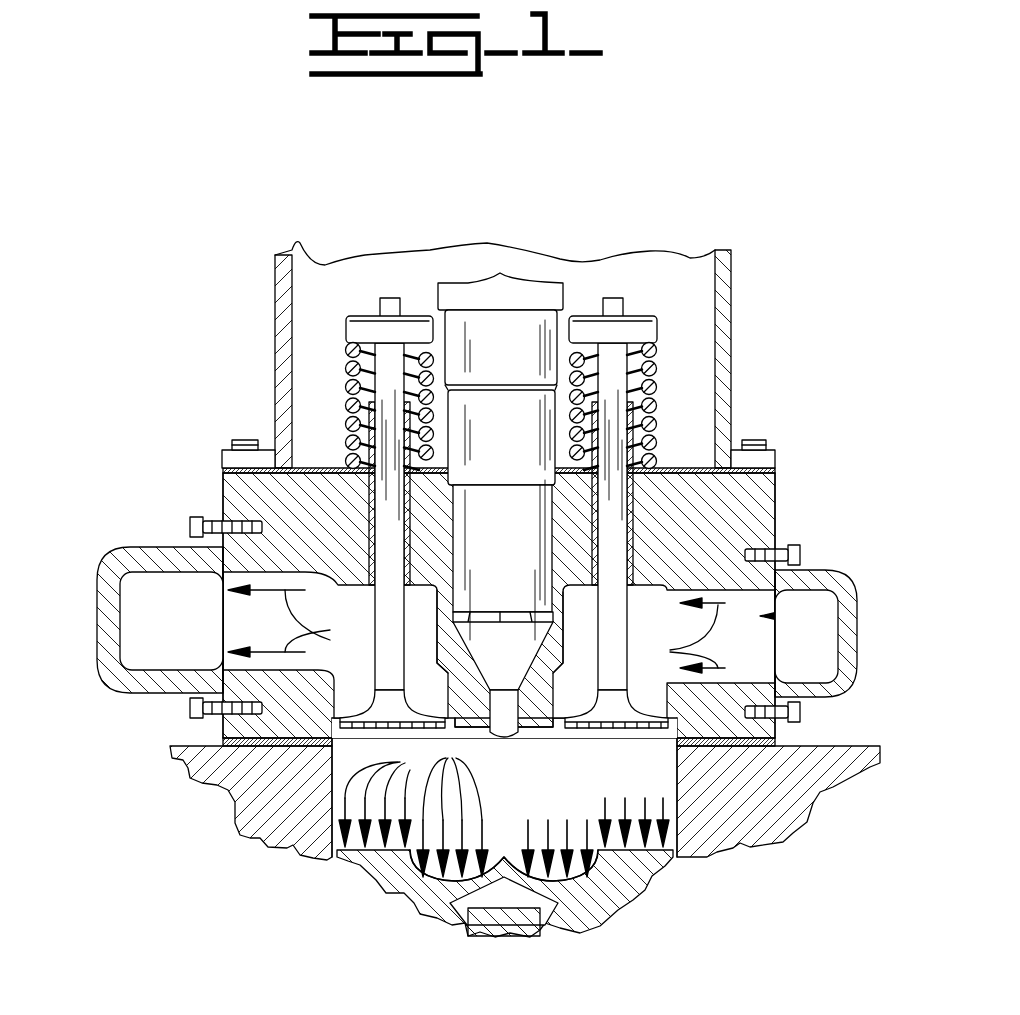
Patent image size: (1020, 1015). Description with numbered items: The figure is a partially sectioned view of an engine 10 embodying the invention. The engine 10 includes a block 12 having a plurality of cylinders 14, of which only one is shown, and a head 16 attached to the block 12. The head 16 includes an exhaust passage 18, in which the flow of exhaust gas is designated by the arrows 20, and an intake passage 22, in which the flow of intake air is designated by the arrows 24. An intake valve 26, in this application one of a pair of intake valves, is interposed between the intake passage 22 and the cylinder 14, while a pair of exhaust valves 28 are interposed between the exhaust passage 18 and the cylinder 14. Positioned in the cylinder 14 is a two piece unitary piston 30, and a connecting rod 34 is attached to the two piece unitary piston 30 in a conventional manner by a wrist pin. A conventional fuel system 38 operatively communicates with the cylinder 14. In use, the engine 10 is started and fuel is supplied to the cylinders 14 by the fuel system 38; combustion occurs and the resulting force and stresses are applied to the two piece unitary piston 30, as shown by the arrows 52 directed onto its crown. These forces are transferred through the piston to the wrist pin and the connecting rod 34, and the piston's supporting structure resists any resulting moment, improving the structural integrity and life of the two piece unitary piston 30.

The engine 10 is at (110, 742).
The block 12 is at (765, 822).
The cylinders 14 is at (502, 854).
The head 16 is at (462, 494).
The exhaust passage 18 is at (278, 639).
The arrows 20 is at (391, 513).
The intake passage 22 is at (767, 647).
The arrows 24 is at (905, 628).
The intake valve 26 is at (590, 632).
The exhaust valves 28 is at (404, 600).
The two piece unitary piston 30 is at (393, 866).
The connecting rod 34 is at (500, 915).
The fuel system 38 is at (515, 428).
The arrows 52 is at (504, 810).